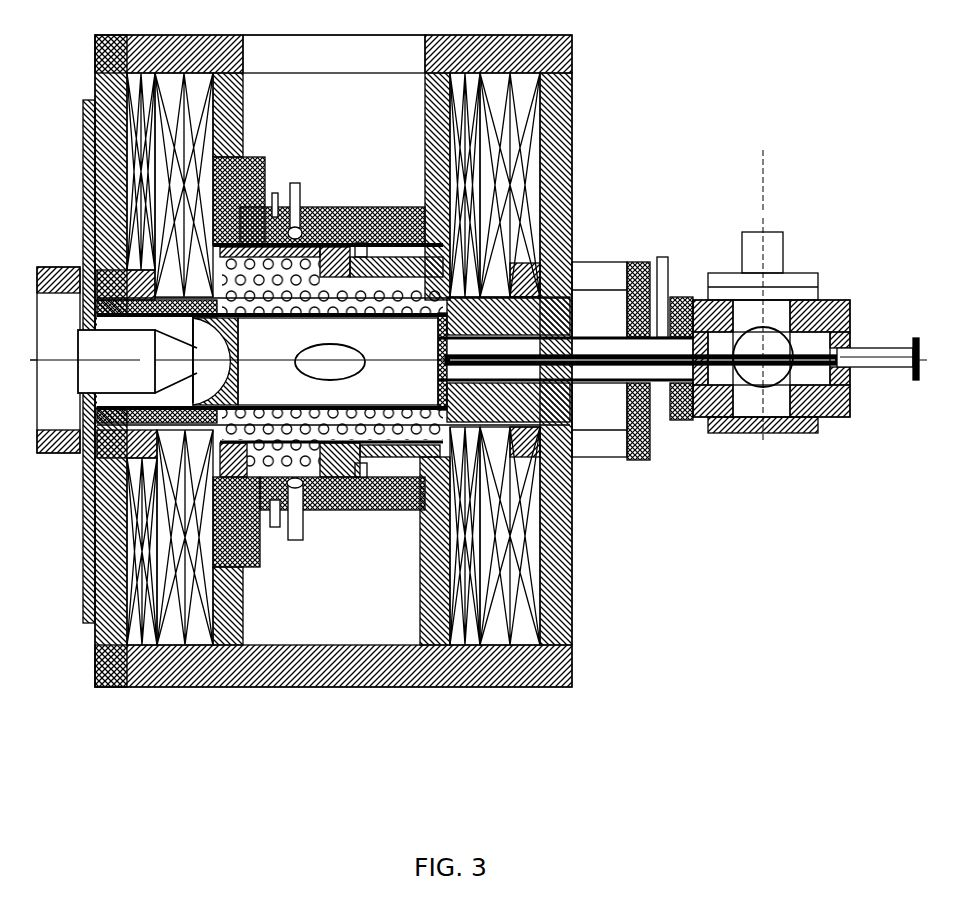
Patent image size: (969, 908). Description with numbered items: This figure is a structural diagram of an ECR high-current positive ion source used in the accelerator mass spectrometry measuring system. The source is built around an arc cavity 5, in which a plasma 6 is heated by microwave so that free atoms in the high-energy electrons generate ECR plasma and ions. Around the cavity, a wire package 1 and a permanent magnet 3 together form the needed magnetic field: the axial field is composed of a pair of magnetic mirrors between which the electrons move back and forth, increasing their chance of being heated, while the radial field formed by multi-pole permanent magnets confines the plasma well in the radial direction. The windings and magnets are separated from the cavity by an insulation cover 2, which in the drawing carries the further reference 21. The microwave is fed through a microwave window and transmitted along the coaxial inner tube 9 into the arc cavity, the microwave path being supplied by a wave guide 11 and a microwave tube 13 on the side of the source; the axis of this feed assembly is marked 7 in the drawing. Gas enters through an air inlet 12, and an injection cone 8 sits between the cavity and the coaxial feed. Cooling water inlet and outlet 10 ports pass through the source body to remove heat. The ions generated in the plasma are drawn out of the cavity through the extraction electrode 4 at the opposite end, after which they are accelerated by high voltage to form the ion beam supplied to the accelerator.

The wire package 1 is at (333, 359).
The insulation cover 2 is at (239, 362).
The sealing ring 21 is at (332, 358).
The permanent magnet 3 is at (332, 363).
The extraction electrode 4 is at (113, 360).
The arc cavity 5 is at (320, 361).
The plasma 6 is at (330, 362).
The valve 7 is at (763, 182).
The injection cone 8 is at (508, 359).
The coaxial inner tube 9 is at (642, 358).
The cooling water inlet and outlet 10 is at (296, 137).
The wave guide 11 is at (752, 258).
The air inlet 12 is at (878, 351).
The microwave tube 13 is at (797, 295).